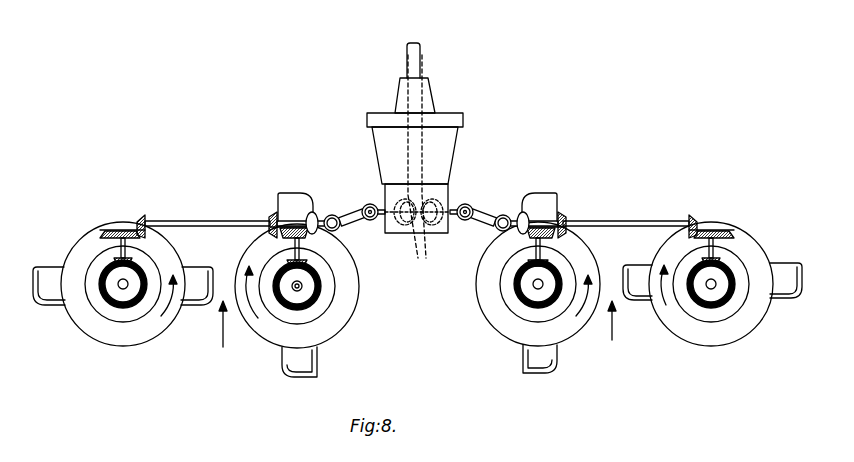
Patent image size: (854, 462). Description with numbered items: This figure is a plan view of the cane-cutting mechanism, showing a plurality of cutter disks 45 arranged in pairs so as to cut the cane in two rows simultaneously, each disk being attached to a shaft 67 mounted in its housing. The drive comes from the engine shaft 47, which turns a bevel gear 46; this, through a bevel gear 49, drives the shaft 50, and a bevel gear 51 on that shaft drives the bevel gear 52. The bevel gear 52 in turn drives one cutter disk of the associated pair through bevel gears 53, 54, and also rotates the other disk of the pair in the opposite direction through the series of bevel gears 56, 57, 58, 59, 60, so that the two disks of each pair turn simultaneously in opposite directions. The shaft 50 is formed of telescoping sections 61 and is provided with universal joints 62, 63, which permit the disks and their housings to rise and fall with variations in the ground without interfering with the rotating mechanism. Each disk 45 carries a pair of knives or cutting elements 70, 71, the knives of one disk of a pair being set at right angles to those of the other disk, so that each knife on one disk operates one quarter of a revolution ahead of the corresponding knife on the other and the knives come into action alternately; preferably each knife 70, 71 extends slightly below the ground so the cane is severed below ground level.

The cutter disk 45 is at (126, 340).
The bevel gear 46 is at (432, 204).
The engine shaft 47 is at (421, 52).
The bevel gear 49 is at (421, 236).
The shaft 50 is at (370, 204).
The bevel gear 51 is at (313, 212).
The bevel gear 52 is at (280, 236).
The bevel gear 53 is at (302, 263).
The bevel gear 54 is at (302, 288).
The bevel gear 56 is at (272, 216).
The bevel gear 57 is at (144, 218).
The bevel gear 58 is at (122, 232).
The bevel gear 59 is at (118, 261).
The bevel gear 60 is at (107, 302).
The telescoping section 61 is at (355, 221).
The universal joint 62 is at (334, 216).
The universal joint 63 is at (372, 220).
The shaft 67 is at (127, 289).
The knife 70 is at (200, 292).
The knife 71 is at (48, 290).